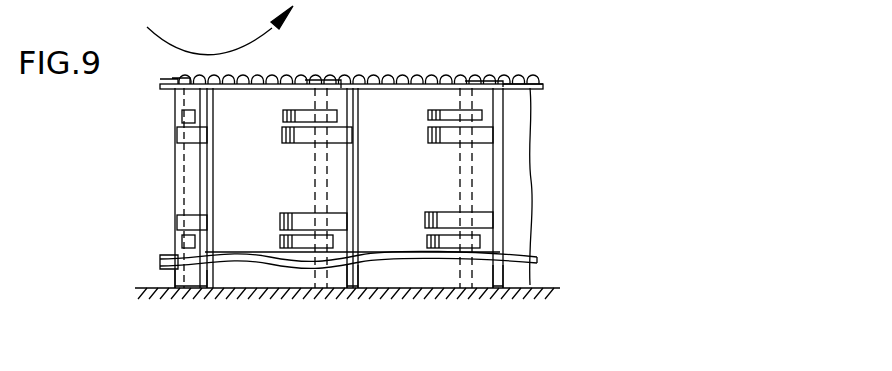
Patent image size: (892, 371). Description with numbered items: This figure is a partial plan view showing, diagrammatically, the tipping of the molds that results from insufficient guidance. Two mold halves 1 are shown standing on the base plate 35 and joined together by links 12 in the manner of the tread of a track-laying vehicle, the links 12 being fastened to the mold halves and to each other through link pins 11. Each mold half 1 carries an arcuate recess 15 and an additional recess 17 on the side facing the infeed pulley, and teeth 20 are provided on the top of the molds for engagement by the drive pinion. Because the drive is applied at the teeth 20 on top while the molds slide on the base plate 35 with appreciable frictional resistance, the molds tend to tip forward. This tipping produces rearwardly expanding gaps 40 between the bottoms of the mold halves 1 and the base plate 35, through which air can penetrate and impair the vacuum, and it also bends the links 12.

The mold half 1 is at (188, 178).
The link pin 11 is at (318, 167).
The link 12 is at (540, 81).
The arcuate recess 15 is at (283, 114).
The additional recess 17 is at (492, 136).
The teeth 20 is at (293, 80).
The base plate 35 is at (145, 298).
The gap 40 is at (215, 290).